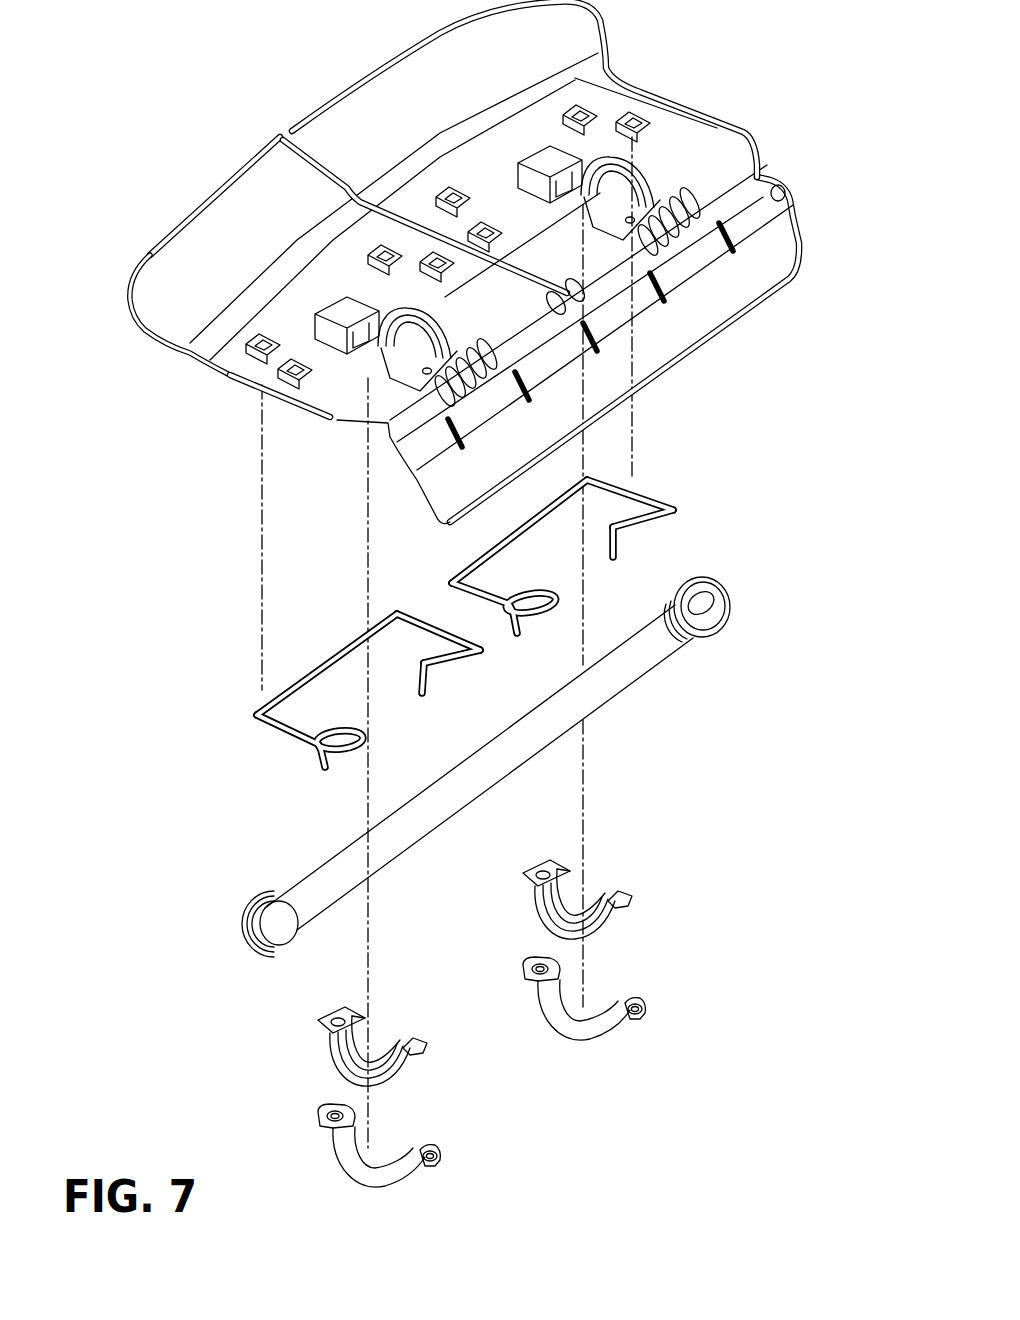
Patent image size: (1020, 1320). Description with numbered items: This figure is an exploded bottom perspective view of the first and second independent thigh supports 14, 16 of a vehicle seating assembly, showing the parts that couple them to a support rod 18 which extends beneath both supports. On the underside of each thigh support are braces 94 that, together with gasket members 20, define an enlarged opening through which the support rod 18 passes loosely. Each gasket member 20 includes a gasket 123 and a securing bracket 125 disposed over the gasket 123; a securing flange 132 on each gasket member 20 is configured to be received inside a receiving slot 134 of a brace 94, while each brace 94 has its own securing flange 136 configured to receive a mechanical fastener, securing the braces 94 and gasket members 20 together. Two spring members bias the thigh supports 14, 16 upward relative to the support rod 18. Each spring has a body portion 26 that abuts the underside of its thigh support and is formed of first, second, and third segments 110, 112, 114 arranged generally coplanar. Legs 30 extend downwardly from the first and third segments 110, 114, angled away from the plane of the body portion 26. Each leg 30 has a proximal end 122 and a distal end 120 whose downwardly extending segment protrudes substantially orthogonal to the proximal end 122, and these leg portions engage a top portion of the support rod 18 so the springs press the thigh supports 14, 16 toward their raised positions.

The first independent thigh support 14 is at (215, 220).
The second independent thigh support 16 is at (350, 120).
The brace 94 is at (658, 188).
The body portion 26 is at (457, 638).
The first segment 110 is at (478, 590).
The second segment 112 is at (552, 502).
The third segment 114 is at (640, 495).
The proximal end 122 is at (655, 510).
The distal end 120 is at (620, 555).
The leg 30 is at (665, 525).
The support rod 18 is at (630, 667).
The gasket member 20 is at (466, 1019).
The gasket 123 is at (577, 890).
The securing bracket 125 is at (577, 1030).
The securing flange 132 is at (550, 863).
The receiving slot 134 is at (557, 908).
The securing flange 136 is at (530, 973).